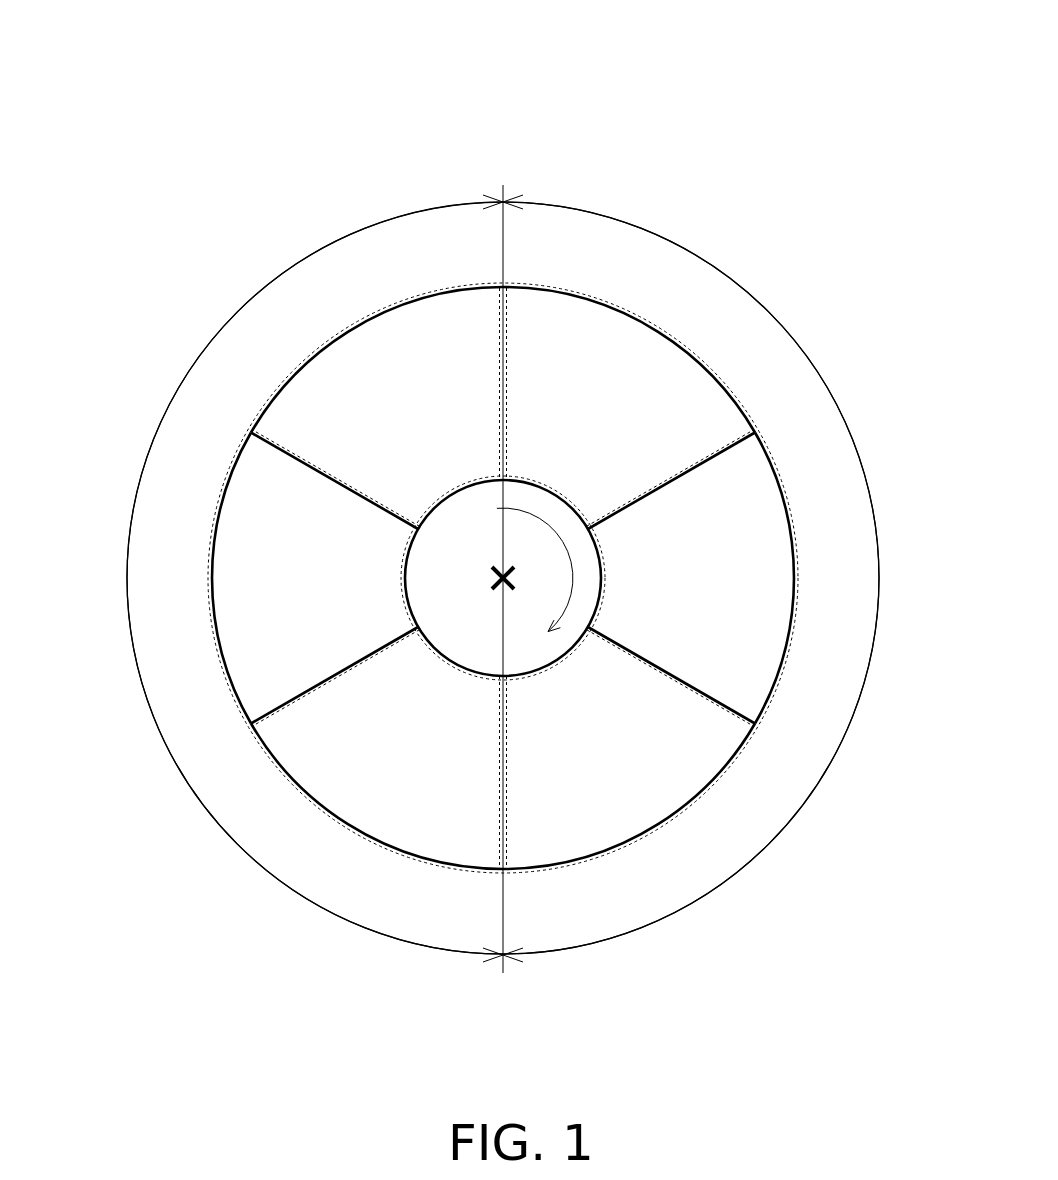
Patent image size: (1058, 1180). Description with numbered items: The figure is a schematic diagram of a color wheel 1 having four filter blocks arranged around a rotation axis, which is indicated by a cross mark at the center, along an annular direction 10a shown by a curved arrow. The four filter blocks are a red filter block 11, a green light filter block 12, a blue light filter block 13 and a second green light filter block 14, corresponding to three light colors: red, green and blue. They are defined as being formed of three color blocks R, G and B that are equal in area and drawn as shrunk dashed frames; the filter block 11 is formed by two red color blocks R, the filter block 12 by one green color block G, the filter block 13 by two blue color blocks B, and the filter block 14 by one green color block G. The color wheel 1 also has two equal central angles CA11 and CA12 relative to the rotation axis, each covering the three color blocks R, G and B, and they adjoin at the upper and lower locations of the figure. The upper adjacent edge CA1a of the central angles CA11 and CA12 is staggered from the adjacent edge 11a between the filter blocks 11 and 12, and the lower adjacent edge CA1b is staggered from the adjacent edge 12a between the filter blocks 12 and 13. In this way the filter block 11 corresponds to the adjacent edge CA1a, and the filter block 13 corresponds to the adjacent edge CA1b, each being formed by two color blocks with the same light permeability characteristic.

The color wheel 1 is at (758, 117).
The annular direction 10a is at (503, 578).
The filter block 11 is at (233, 420).
The adjacent edge 11a is at (709, 455).
The filter block 12 is at (775, 423).
The adjacent edge 12a is at (730, 708).
The filter block 13 is at (233, 736).
The filter block 14 is at (231, 423).
The adjacent edge CA1a is at (502, 337).
The adjacent edge CA1b is at (500, 820).
The central angle CA11 is at (724, 578).
The central angle CA12 is at (271, 578).